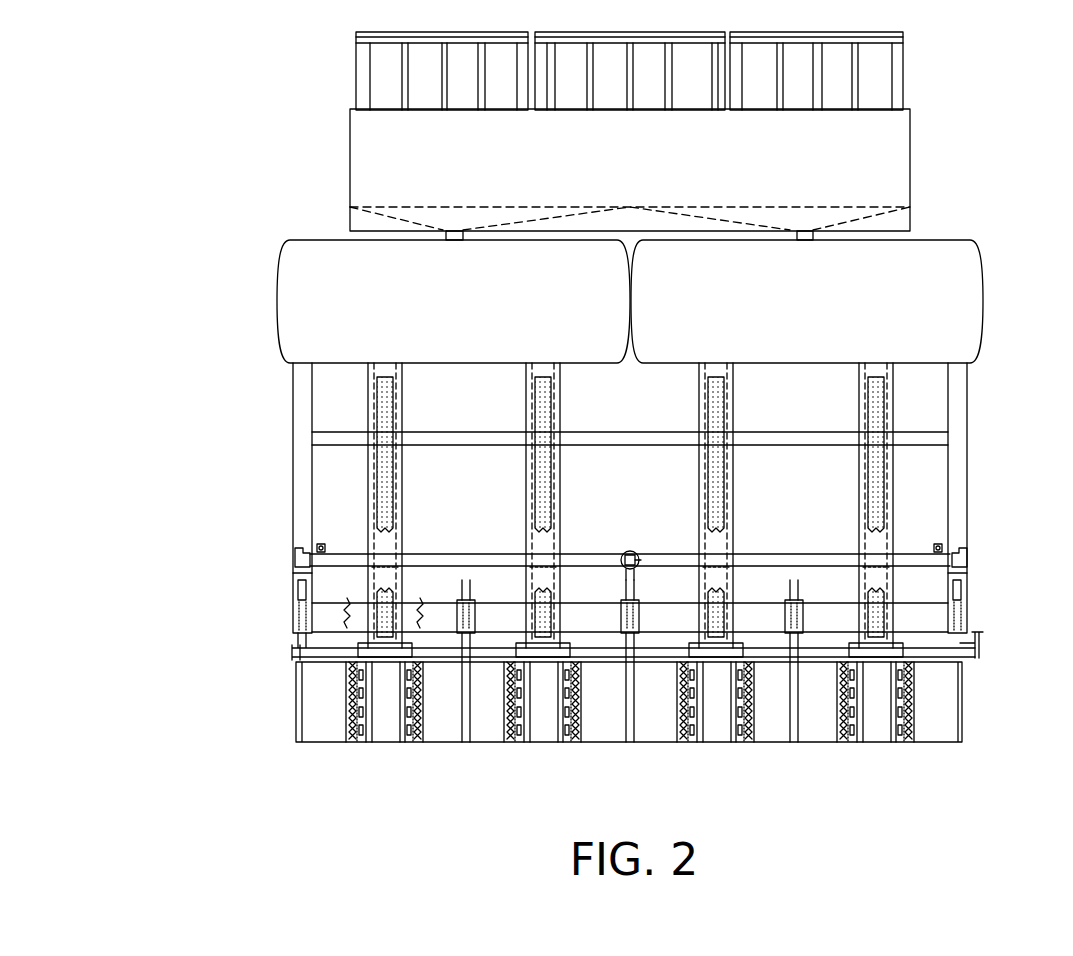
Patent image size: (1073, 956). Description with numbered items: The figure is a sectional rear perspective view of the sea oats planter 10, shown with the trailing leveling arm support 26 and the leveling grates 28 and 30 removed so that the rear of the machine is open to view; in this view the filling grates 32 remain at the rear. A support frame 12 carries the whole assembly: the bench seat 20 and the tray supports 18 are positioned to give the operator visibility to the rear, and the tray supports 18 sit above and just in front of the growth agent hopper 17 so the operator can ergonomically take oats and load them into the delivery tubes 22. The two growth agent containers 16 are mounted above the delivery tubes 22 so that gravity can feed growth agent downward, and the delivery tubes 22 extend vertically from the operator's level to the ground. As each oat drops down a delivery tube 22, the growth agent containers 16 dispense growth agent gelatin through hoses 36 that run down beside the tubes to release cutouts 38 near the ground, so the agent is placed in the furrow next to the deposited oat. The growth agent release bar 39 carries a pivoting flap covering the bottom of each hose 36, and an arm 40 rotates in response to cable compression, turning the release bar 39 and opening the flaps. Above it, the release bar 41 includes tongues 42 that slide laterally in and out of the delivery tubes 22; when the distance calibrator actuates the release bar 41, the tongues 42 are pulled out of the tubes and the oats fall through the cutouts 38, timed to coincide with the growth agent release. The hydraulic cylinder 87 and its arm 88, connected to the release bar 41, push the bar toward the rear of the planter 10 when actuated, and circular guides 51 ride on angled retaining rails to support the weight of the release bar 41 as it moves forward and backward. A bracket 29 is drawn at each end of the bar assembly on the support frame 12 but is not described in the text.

The sea oats planter 10 is at (189, 489).
The support frame 12 is at (292, 446).
The growth agent container 16 is at (436, 318).
The growth agent hopper 17 is at (346, 182).
The tray supports 18 is at (350, 77).
The bench seat 20 is at (630, 437).
The delivery tubes 22 is at (525, 403).
The trailing leveling arm support 26 is at (769, 600).
The leveling grate 28 is at (444, 746).
The end mounting block 29 is at (300, 592).
The leveling grate 30 is at (320, 746).
The filling grates 32 is at (355, 744).
The hoses 36 is at (383, 520).
The cutouts 38 is at (388, 683).
The growth agent release bar 39 is at (322, 652).
The arm 40 is at (981, 645).
The release bar 41 is at (919, 555).
The tongues 42 is at (392, 572).
The circular guides 51 is at (303, 548).
The hydraulic cylinder 87 is at (628, 551).
The arm 88 is at (641, 560).